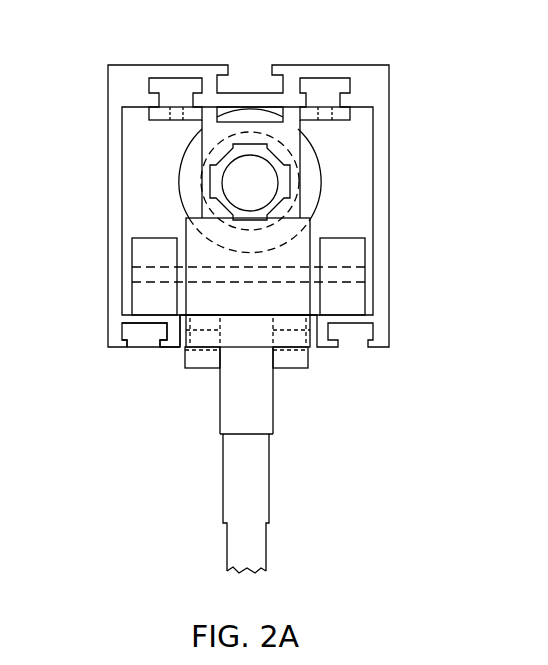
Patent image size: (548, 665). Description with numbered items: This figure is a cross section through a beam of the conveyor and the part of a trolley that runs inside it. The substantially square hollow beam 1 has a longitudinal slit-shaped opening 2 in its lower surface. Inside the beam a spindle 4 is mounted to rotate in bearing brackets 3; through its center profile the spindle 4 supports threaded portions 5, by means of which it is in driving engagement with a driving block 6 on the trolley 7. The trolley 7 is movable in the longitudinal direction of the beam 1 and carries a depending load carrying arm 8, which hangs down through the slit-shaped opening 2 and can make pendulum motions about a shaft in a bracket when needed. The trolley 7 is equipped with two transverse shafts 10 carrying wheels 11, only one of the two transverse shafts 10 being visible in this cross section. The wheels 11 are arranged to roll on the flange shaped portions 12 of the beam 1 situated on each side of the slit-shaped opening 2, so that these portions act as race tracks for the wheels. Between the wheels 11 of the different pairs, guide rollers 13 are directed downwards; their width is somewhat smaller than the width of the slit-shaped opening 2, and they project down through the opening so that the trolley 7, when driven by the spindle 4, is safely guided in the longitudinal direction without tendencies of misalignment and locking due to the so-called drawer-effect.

The hollow beam 1 is at (115, 113).
The slit-shaped opening 2 is at (180, 347).
The bearing brackets 3 is at (298, 132).
The spindle 4 is at (253, 165).
The threaded portions 5 is at (188, 173).
The driving block 6 is at (200, 244).
The trolley 7 is at (278, 300).
The load carrying arm 8 is at (257, 485).
The transverse shafts 10 is at (143, 275).
The wheels 11 is at (150, 255).
The flange shaped portions 12 is at (132, 321).
The guide rollers 13 is at (207, 320).